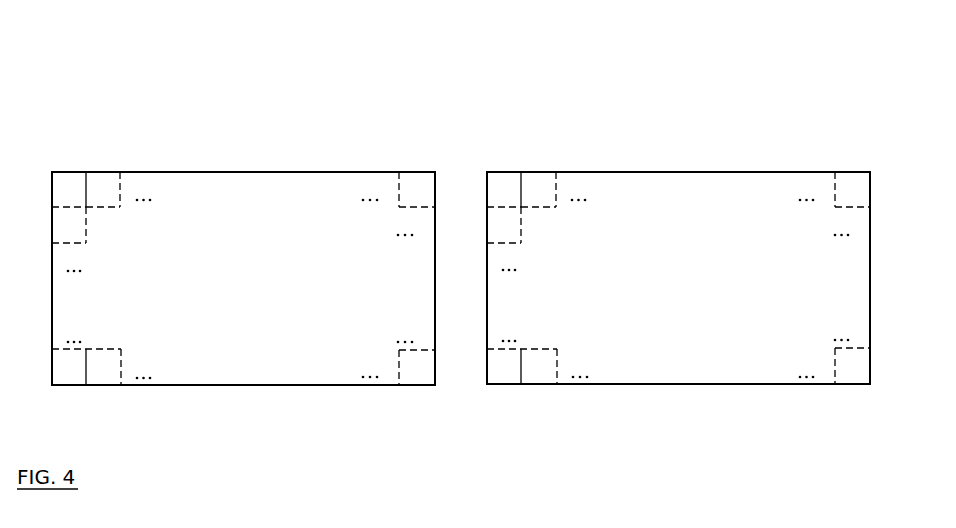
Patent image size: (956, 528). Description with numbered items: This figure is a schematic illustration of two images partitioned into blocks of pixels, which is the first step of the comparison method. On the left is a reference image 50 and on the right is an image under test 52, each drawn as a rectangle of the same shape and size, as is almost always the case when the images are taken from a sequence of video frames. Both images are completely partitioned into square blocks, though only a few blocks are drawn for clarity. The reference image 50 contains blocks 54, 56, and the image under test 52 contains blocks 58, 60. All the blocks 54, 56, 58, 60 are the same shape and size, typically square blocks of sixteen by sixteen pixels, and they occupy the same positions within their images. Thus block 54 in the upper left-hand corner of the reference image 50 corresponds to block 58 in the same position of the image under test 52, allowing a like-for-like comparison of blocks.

The reference image 50 is at (243, 405).
The image under test 52 is at (662, 402).
The block 54 is at (66, 178).
The block 56 is at (106, 180).
The block 58 is at (503, 178).
The block 60 is at (540, 178).